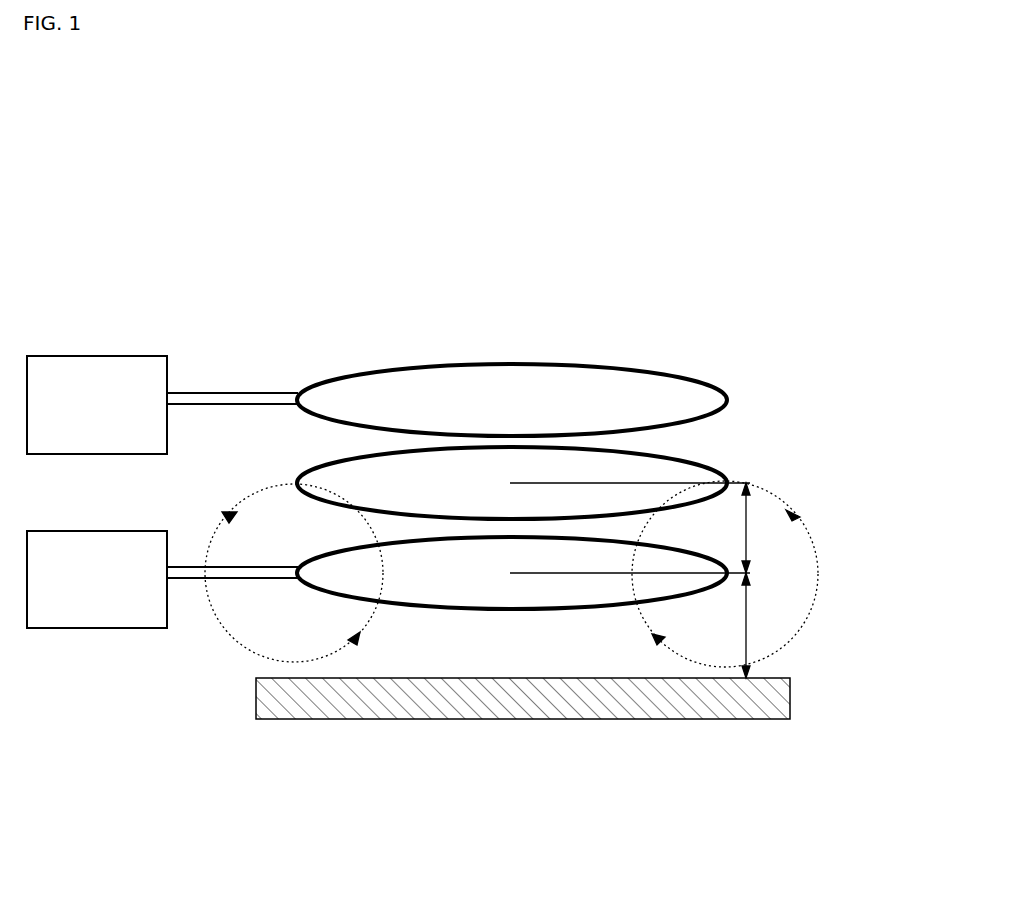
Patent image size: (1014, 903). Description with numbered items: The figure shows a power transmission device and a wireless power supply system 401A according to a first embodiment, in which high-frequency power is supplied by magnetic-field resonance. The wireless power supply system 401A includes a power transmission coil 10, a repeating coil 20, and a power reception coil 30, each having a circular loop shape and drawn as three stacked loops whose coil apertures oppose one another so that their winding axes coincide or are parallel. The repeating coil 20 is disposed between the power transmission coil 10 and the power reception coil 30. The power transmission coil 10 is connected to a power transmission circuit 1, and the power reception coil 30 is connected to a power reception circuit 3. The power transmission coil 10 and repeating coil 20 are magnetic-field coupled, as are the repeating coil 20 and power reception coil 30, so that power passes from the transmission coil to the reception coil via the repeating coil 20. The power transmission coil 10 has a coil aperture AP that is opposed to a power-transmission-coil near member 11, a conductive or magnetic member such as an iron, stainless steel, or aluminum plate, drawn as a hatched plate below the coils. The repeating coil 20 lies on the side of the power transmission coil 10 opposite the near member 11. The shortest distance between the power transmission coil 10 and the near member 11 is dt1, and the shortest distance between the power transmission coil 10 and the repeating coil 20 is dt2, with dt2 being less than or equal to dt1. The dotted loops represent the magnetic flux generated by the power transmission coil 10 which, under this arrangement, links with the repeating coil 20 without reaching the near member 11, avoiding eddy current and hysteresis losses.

The power transmission circuit 1 is at (106, 531).
The power reception circuit 3 is at (106, 356).
The power transmission coil 10 is at (302, 554).
The repeating coil 20 is at (302, 463).
The power reception coil 30 is at (302, 380).
The power-transmission-coil near member 11 is at (508, 719).
The wireless power supply system 401A is at (760, 277).
The coil aperture AP is at (498, 588).
The shortest distance between power transmission coil and near member dt1 is at (630, 625).
The shortest distance between power transmission coil and repeating coil dt2 is at (630, 528).